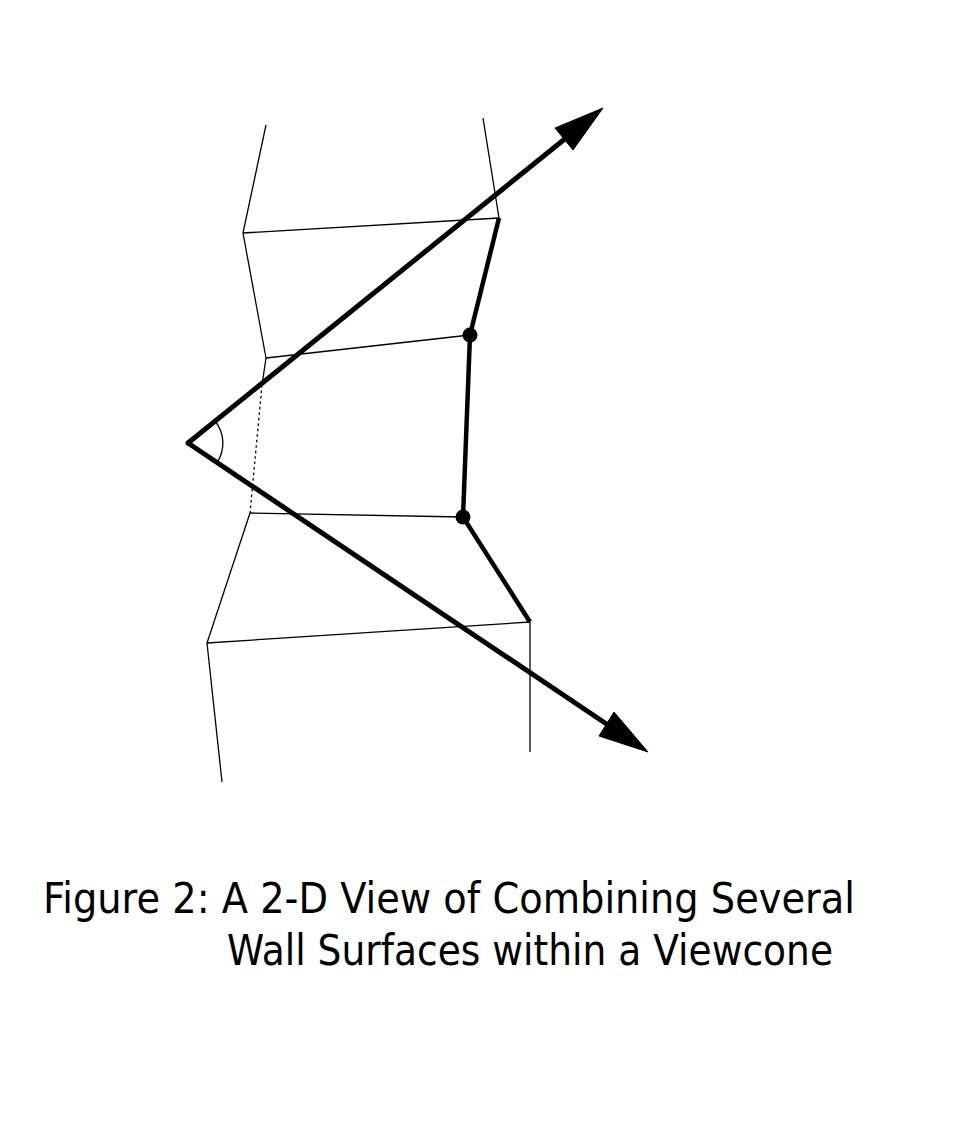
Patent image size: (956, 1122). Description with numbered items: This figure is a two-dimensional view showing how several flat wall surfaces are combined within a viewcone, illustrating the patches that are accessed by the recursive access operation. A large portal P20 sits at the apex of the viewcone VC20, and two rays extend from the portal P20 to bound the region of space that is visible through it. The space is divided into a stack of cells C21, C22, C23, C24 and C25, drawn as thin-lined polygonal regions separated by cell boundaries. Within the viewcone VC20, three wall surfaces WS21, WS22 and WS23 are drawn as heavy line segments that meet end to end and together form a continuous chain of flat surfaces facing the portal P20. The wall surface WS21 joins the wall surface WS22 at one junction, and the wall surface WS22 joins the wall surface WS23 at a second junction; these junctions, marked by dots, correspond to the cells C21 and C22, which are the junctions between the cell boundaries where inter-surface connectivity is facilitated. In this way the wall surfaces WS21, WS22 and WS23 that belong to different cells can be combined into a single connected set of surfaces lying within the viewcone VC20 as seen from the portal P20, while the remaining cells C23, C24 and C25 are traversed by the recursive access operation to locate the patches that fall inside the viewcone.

The viewcone VC20 is at (240, 397).
The large portal P20 is at (252, 460).
The wall surface WS21 is at (487, 278).
The wall surface WS22 is at (468, 422).
The wall surface WS23 is at (520, 598).
The cell C21 is at (350, 165).
The cell C22 is at (339, 283).
The cell C23 is at (368, 415).
The cell C24 is at (337, 600).
The cell C25 is at (372, 697).